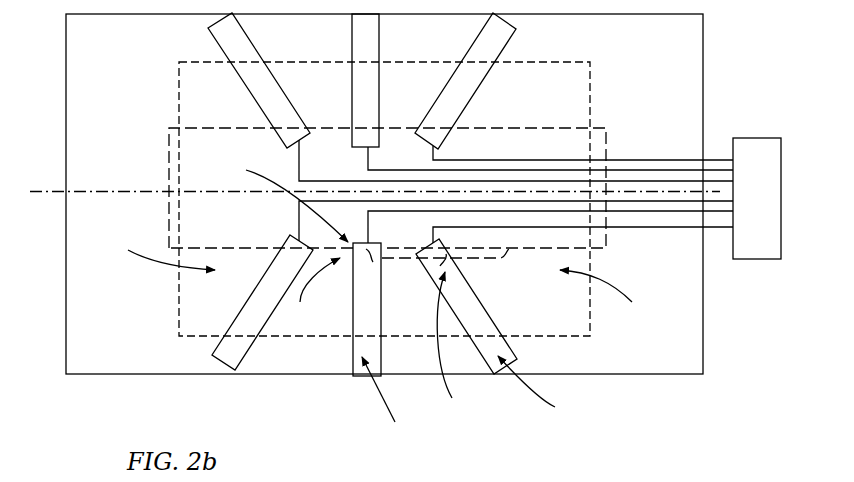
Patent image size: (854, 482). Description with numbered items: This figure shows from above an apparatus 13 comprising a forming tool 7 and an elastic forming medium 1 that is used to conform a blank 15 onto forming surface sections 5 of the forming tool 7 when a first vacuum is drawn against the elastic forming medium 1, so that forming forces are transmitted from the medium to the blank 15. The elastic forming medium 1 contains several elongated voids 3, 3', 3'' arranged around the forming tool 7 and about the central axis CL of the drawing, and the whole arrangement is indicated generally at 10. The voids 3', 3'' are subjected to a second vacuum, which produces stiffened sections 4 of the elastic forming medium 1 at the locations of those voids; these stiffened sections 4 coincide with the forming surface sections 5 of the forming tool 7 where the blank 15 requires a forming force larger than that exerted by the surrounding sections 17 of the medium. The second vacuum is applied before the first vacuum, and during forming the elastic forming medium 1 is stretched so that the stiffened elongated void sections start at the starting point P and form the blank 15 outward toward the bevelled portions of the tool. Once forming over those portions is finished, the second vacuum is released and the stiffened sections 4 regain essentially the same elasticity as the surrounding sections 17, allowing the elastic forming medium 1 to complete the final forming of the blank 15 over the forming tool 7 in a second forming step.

The elastic forming medium 1 is at (396, 233).
The elongated void 3 is at (362, 191).
The elongated void 3' is at (387, 309).
The elongated void 3'' is at (466, 322).
The stiffened section 4 is at (472, 400).
The forming surface section 5 is at (384, 346).
The forming tool 7 is at (606, 133).
The system 10 is at (516, 311).
The apparatus 13 is at (48, 370).
The blank 15 is at (590, 72).
The surrounding section 17 is at (382, 280).
The center line CL is at (126, 190).
The starting point P is at (283, 200).